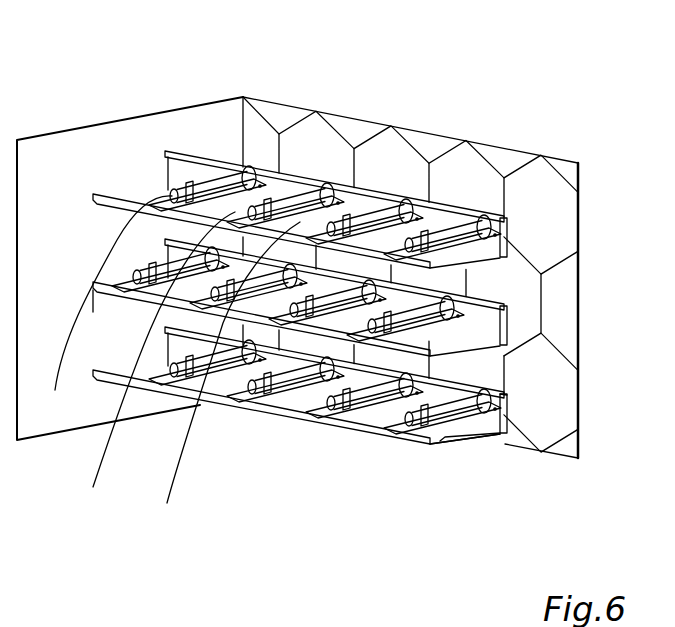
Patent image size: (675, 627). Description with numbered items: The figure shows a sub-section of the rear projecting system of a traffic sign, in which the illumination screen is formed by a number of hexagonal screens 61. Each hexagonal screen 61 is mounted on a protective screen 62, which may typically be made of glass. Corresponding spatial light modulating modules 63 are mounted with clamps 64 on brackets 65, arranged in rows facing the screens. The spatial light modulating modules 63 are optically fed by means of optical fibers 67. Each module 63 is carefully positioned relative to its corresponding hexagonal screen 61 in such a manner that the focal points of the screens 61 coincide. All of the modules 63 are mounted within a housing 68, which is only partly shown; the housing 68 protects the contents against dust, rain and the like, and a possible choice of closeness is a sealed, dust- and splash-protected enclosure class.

The hexagonal screen 61 is at (330, 112).
The protective screen 62 is at (478, 140).
The spatial light modulating module 63 is at (453, 437).
The clamp 64 is at (422, 430).
The bracket 65 is at (445, 437).
The optical fiber 67 is at (262, 462).
The housing 68 is at (157, 108).